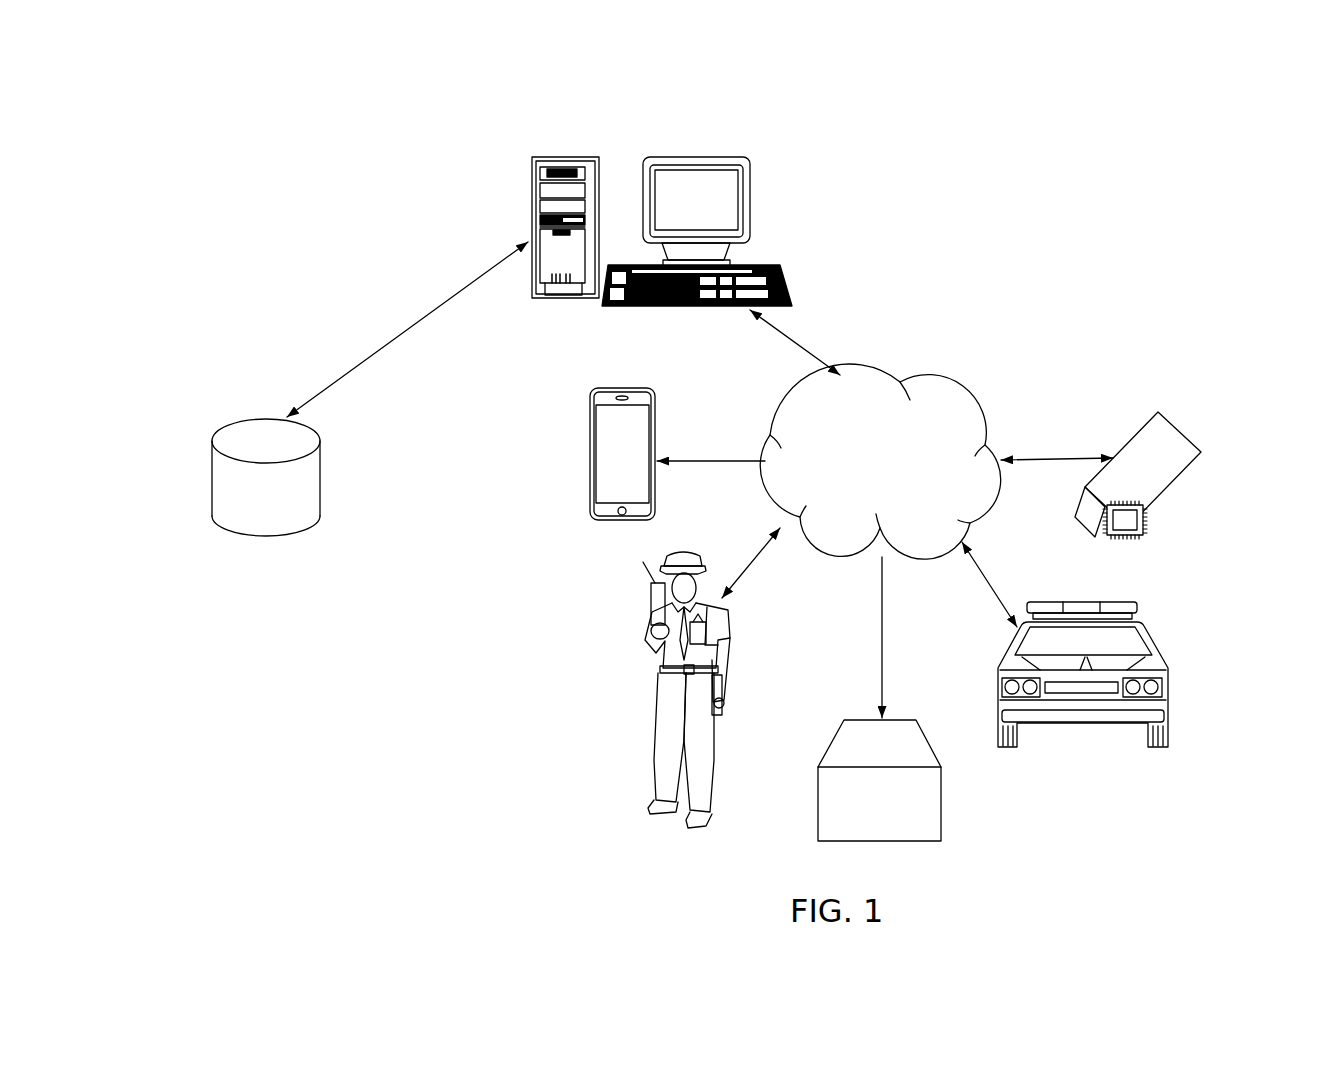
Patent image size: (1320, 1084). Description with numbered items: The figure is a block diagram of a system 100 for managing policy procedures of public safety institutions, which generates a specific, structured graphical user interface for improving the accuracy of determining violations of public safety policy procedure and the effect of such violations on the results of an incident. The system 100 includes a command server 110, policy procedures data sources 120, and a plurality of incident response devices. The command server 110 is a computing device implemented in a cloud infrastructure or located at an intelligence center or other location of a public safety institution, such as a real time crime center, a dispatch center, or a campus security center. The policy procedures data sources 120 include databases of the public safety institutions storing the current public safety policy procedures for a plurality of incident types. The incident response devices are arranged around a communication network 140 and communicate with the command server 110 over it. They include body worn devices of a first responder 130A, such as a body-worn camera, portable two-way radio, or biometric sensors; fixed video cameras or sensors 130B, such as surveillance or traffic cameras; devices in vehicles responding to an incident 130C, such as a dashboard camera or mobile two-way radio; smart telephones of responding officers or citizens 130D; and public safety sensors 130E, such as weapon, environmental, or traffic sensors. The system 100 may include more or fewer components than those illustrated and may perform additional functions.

The system 100 is at (340, 117).
The command server 110 is at (532, 188).
The policy procedures data sources 120 is at (212, 478).
The body worn devices of a first responder 130A is at (648, 638).
The fixed video cameras or sensors 130B is at (1167, 443).
The devices in vehicles responding to an incident 130C is at (1150, 637).
The smart telephones of responding officers or citizens 130D is at (590, 458).
The public safety sensors 130E is at (818, 806).
The communication network 140 is at (960, 388).